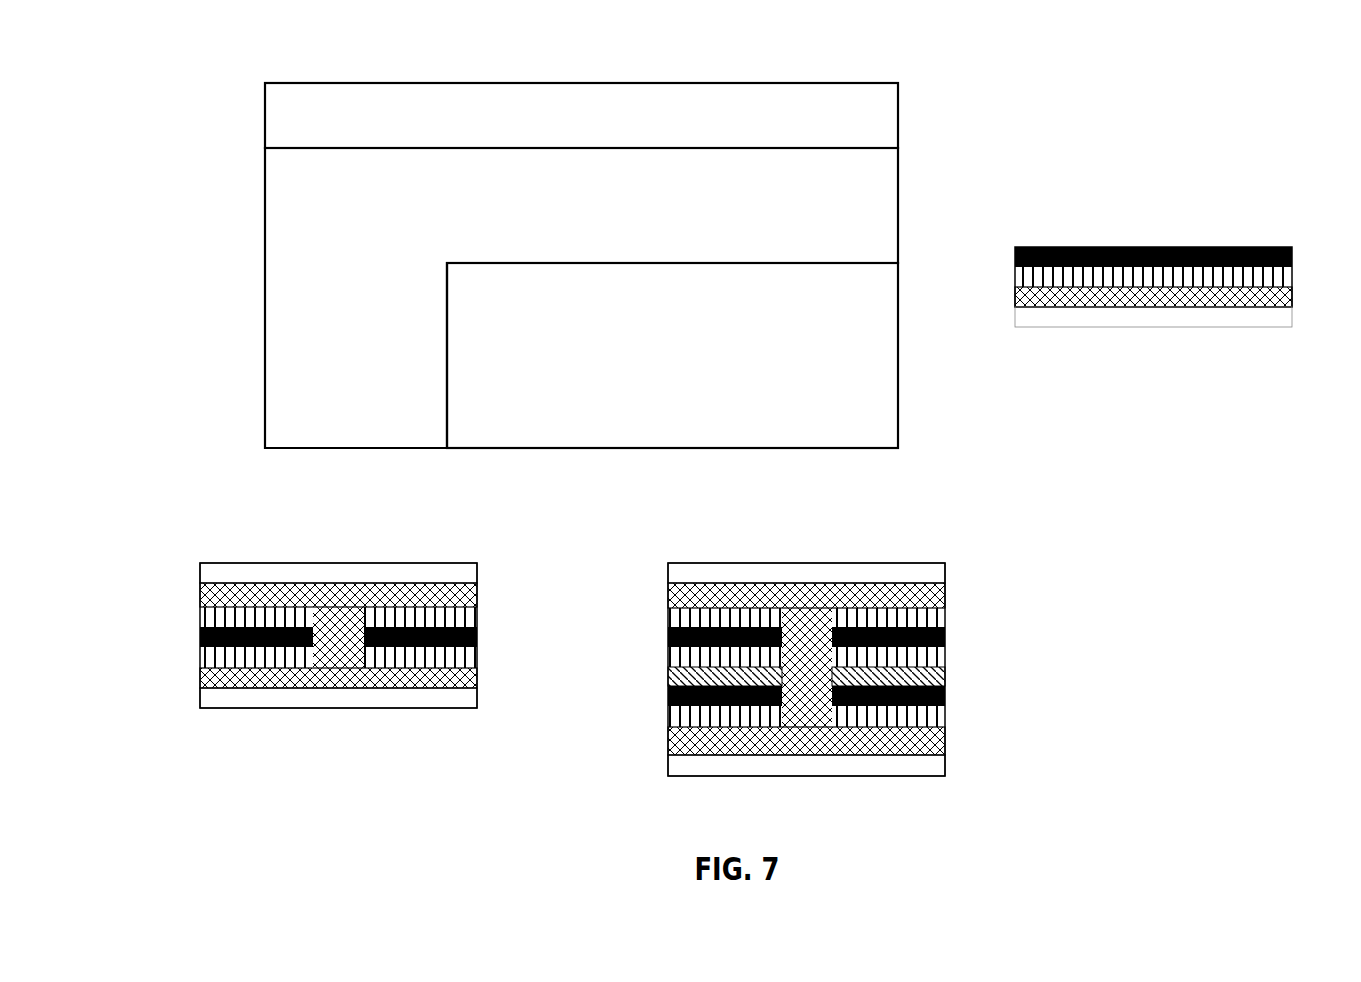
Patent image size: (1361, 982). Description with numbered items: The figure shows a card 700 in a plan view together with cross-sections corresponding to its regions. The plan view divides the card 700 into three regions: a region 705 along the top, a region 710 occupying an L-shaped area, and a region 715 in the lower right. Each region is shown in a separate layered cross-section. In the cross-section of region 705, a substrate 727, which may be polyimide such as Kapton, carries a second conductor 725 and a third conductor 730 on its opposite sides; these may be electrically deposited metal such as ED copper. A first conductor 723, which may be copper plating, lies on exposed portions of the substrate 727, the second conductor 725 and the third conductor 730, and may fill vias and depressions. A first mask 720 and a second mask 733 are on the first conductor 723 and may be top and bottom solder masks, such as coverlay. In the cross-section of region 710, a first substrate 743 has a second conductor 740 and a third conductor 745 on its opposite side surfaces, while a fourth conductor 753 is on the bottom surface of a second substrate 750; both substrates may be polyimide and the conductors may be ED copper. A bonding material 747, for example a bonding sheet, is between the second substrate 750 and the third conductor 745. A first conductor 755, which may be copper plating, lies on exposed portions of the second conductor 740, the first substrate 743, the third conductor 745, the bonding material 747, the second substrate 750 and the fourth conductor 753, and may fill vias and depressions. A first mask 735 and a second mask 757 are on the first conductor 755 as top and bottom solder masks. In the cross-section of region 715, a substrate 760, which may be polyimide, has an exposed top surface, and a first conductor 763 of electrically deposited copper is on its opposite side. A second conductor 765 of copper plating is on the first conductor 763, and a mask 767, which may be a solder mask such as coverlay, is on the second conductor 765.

The card 700 is at (1222, 517).
The region 705 is at (583, 130).
The region 710 is at (355, 265).
The region 715 is at (643, 375).
The first mask 720 is at (215, 574).
The first conductor 723 is at (462, 598).
The second conductor 725 is at (212, 617).
The substrate 727 is at (477, 637).
The third conductor 730 is at (212, 657).
The second mask 733 is at (218, 702).
The first mask 735 is at (680, 574).
The second conductor 740 is at (680, 617).
The first substrate 743 is at (945, 637).
The third conductor 745 is at (680, 660).
The bonding material 747 is at (938, 677).
The second substrate 750 is at (680, 697).
The fourth conductor 753 is at (938, 720).
The first conductor 755 is at (680, 745).
The second mask 757 is at (938, 768).
The substrate 760 is at (1255, 247).
The first conductor 763 is at (1022, 280).
The second conductor 765 is at (1027, 297).
The mask 767 is at (1173, 316).